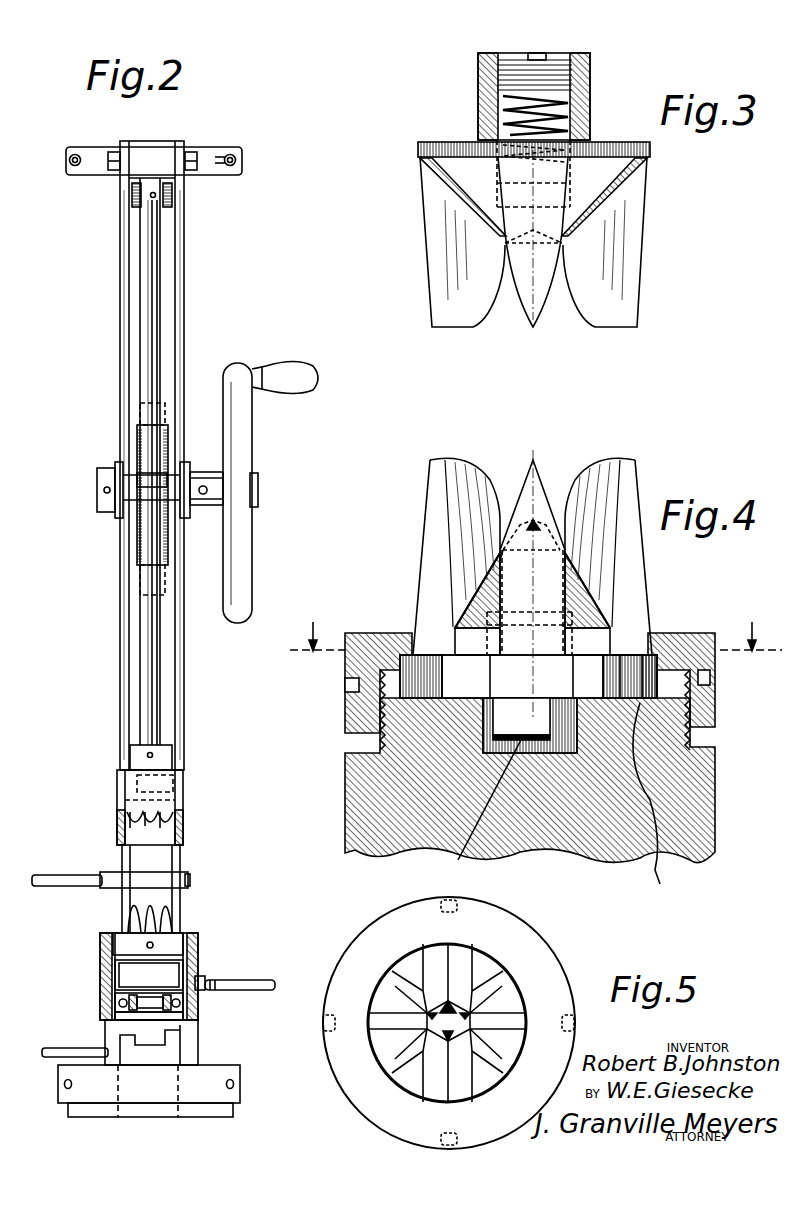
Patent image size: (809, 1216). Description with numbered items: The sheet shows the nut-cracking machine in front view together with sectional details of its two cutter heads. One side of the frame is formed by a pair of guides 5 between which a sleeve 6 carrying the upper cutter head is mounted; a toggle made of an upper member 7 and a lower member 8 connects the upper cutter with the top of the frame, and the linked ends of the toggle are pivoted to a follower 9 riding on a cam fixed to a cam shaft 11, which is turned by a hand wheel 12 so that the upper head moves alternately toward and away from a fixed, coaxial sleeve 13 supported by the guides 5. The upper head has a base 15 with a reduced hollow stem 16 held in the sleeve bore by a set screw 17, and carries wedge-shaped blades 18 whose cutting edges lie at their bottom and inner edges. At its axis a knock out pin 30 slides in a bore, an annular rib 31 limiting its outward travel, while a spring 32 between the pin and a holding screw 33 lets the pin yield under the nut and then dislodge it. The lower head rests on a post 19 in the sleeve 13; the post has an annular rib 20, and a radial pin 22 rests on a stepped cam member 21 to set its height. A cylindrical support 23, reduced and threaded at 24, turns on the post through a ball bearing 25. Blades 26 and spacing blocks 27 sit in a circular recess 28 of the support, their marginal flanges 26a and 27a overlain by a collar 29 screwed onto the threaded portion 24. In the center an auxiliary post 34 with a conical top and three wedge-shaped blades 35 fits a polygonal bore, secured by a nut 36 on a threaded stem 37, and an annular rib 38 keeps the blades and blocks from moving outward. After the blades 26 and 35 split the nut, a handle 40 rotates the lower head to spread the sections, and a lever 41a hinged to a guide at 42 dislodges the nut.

In FIG. 2, the guides 5 is at (184, 669).
In FIG. 2, the sleeve 6 is at (183, 822).
In FIG. 4, the sleeve 6 is at (536, 651).
In FIG. 2, the upper toggle member 7 is at (153, 265).
In FIG. 2, the lower toggle member 8 is at (148, 675).
In FIG. 2, the follower 9 is at (167, 430).
In FIG. 2, the cam shaft 11 is at (260, 492).
In FIG. 2, the hand wheel 12 is at (250, 542).
In FIG. 2, the sleeve 13 is at (102, 978).
In FIG. 3, the base 15 is at (623, 141).
In FIG. 3, the hollow stem 16 is at (590, 64).
In FIG. 2, the set screw 17 is at (163, 778).
In FIG. 2, the blades 18 is at (127, 820).
In FIG. 3, the blades 18 is at (588, 305).
In FIG. 2, the post 19 is at (133, 1033).
In FIG. 2, the annular rib 20 is at (168, 1017).
In FIG. 2, the stepped cam member 21 is at (165, 1045).
In FIG. 2, the pin 22 is at (48, 1058).
In FIG. 2, the support 23 is at (168, 968).
In FIG. 4, the support 23 is at (703, 786).
In FIG. 2, the threaded portion 24 is at (198, 946).
In FIG. 4, the threaded portion 24 is at (677, 663).
In FIG. 2, the ball bearing 25 is at (198, 980).
In FIG. 4, the blades 26 is at (535, 470).
In FIG. 5, the blades 26 is at (442, 968).
In FIG. 4, the marginal flange 26a is at (412, 652).
In FIG. 4, the spacing blocks 27 is at (577, 600).
In FIG. 4, the marginal flange 27a is at (528, 676).
In FIG. 4, the circular recess 28 is at (658, 801).
In FIG. 4, the collar 29 is at (708, 638).
In FIG. 5, the collar 29 is at (364, 938).
In FIG. 3, the knock out pin 30 is at (503, 233).
In FIG. 3, the annular rib 31 is at (497, 183).
In FIG. 3, the spring 32 is at (512, 108).
In FIG. 3, the holding screw 33 is at (545, 55).
In FIG. 4, the post 34 is at (540, 530).
In FIG. 5, the post 34 is at (449, 1010).
In FIG. 4, the blades 35 is at (503, 548).
In FIG. 5, the blades 35 is at (458, 1016).
In FIG. 4, the nut 36 is at (530, 725).
In FIG. 4, the threaded stem 37 is at (489, 810).
In FIG. 4, the annular rib 38 is at (487, 610).
In FIG. 2, the handle 40 is at (266, 990).
In FIG. 2, the lever 41a is at (47, 872).
In FIG. 2, the hinge 42 is at (192, 883).